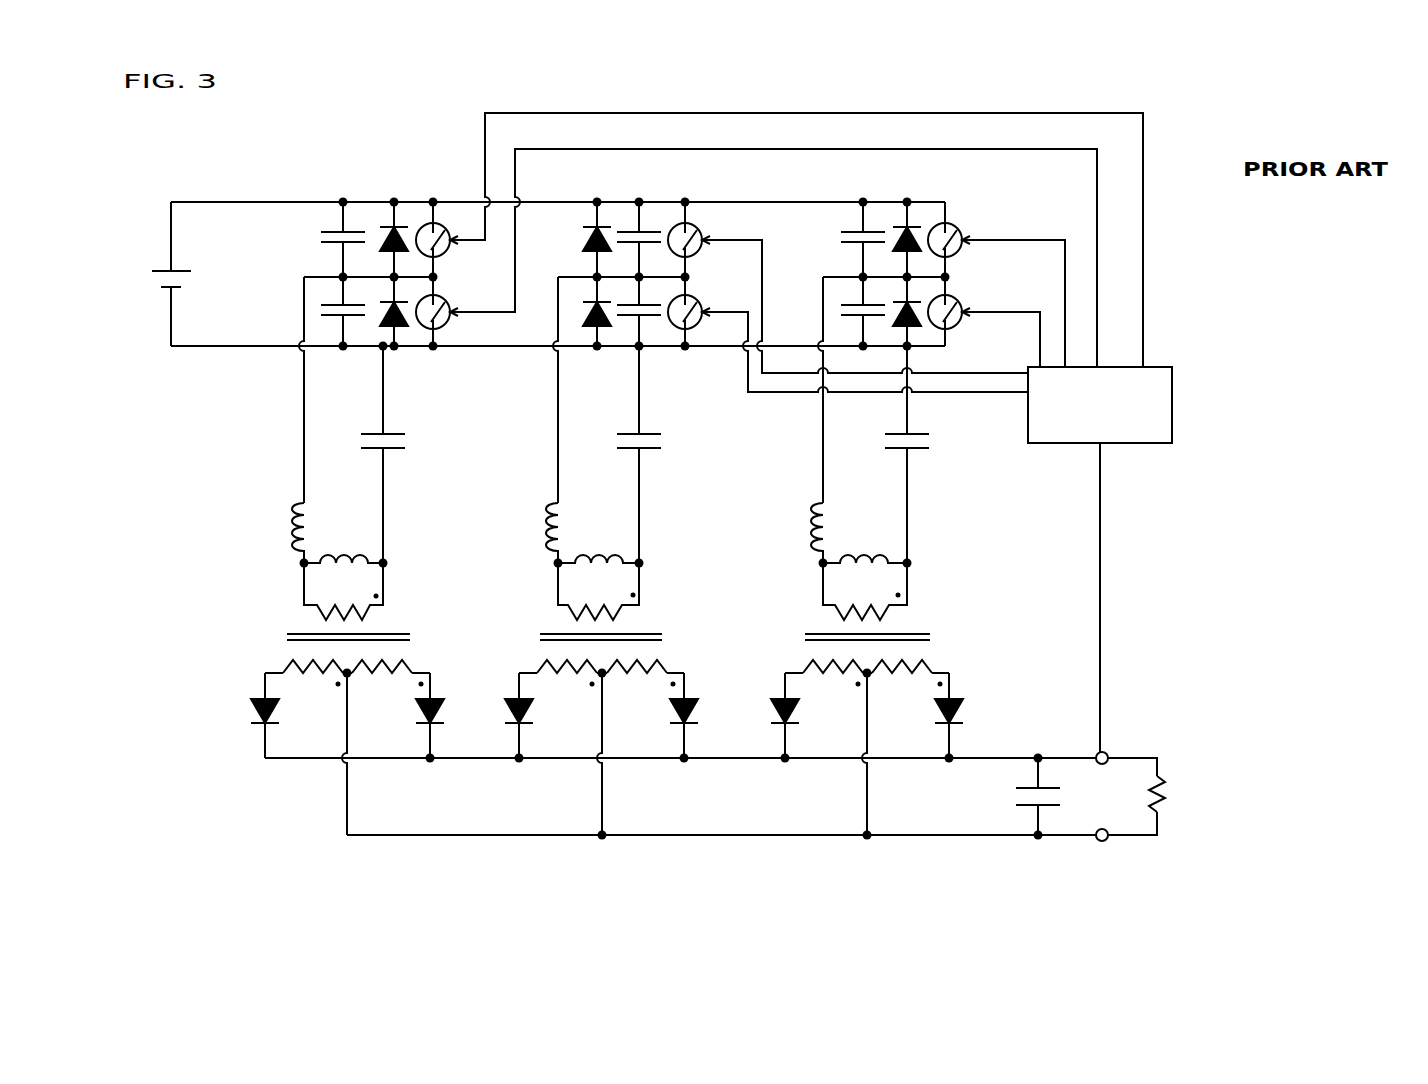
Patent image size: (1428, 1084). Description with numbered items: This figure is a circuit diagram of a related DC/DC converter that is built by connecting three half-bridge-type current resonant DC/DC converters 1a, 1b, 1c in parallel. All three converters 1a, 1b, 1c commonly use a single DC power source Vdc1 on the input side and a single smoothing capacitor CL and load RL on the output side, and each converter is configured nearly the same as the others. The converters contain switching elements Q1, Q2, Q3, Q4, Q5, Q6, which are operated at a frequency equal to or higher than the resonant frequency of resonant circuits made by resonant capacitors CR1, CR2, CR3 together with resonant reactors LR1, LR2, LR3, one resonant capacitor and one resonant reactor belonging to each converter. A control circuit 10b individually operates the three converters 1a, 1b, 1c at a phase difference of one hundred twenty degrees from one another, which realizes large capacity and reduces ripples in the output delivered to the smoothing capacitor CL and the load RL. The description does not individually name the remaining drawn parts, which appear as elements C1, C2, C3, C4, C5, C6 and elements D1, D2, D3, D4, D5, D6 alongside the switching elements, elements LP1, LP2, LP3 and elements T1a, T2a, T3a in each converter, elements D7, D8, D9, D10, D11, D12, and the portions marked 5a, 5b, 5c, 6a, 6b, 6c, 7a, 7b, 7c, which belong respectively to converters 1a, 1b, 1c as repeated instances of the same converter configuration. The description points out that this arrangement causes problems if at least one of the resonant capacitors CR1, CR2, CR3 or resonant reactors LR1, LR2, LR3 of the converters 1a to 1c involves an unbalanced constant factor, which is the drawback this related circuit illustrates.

The half-bridge-type current resonant DC/DC converter 1a is at (374, 185).
The half-bridge-type current resonant DC/DC converter 1b is at (690, 112).
The half-bridge-type current resonant DC/DC converter 1c is at (918, 112).
The primary winding np of transformer T1a 5a is at (330, 578).
The first secondary winding ns1 of transformer T1a 5b is at (305, 727).
The second secondary winding ns2 of transformer T1a 5c is at (382, 727).
The primary winding np of transformer T2a 6a is at (579, 578).
The first secondary winding ns1 of transformer T2a 6b is at (553, 727).
The second secondary winding ns2 of transformer T2a 6c is at (629, 727).
The primary winding np of transformer T3a 7a is at (840, 578).
The first secondary winding ns1 of transformer T3a 7b is at (817, 727).
The second secondary winding ns2 of transformer T3a 7c is at (892, 727).
The control circuit 10b is at (1172, 413).
The DC power source Vdc1 is at (144, 274).
The capacitor C1 is at (331, 239).
The capacitor C2 is at (335, 312).
The capacitor C3 is at (645, 239).
The capacitor C4 is at (645, 311).
The capacitor C5 is at (846, 239).
The capacitor C6 is at (856, 311).
The diode D1 is at (380, 239).
The diode D2 is at (380, 311).
The diode D3 is at (579, 239).
The diode D4 is at (586, 311).
The diode D5 is at (906, 224).
The diode D6 is at (894, 311).
The switching element Q1 is at (449, 239).
The switching element Q2 is at (449, 311).
The switching element Q3 is at (700, 239).
The switching element Q4 is at (700, 311).
The switching element Q5 is at (963, 239).
The switching element Q6 is at (963, 311).
The resonant capacitor CR1 is at (357, 454).
The resonant capacitor CR2 is at (613, 454).
The resonant capacitor CR3 is at (882, 454).
The resonant reactor LR1 is at (275, 533).
The resonant reactor LR2 is at (529, 533).
The resonant reactor LR3 is at (791, 533).
The primary inductance LP1 is at (343, 542).
The primary inductance LP2 is at (598, 542).
The primary inductance LP3 is at (865, 542).
The transformer T1a is at (326, 637).
The transformer T2a is at (579, 637).
The transformer T3a is at (847, 637).
The rectifier diode D7 is at (251, 715).
The rectifier diode D8 is at (414, 715).
The rectifier diode D9 is at (503, 715).
The rectifier diode D10 is at (660, 715).
The rectifier diode D11 is at (766, 715).
The rectifier diode D12 is at (925, 715).
The smoothing capacitor CL is at (1018, 796).
The load RL is at (1140, 794).